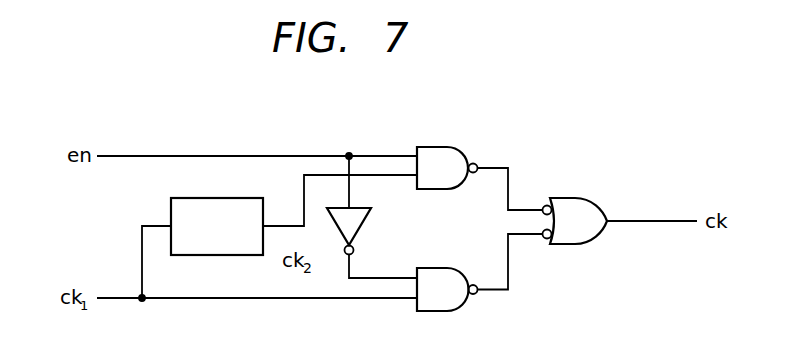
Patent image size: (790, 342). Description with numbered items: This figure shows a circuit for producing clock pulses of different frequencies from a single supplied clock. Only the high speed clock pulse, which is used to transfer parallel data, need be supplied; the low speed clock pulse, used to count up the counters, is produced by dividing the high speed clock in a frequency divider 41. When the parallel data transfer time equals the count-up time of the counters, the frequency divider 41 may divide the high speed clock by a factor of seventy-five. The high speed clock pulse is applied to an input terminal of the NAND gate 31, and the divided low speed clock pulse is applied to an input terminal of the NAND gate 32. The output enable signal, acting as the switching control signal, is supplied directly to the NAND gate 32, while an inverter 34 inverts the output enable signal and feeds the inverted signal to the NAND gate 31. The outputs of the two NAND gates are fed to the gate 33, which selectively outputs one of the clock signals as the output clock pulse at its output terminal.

The frequency divider 41 is at (171, 206).
The inverter 34 is at (363, 223).
The NAND gate 32 is at (437, 147).
The NAND gate 31 is at (465, 308).
The gate 33 is at (578, 198).